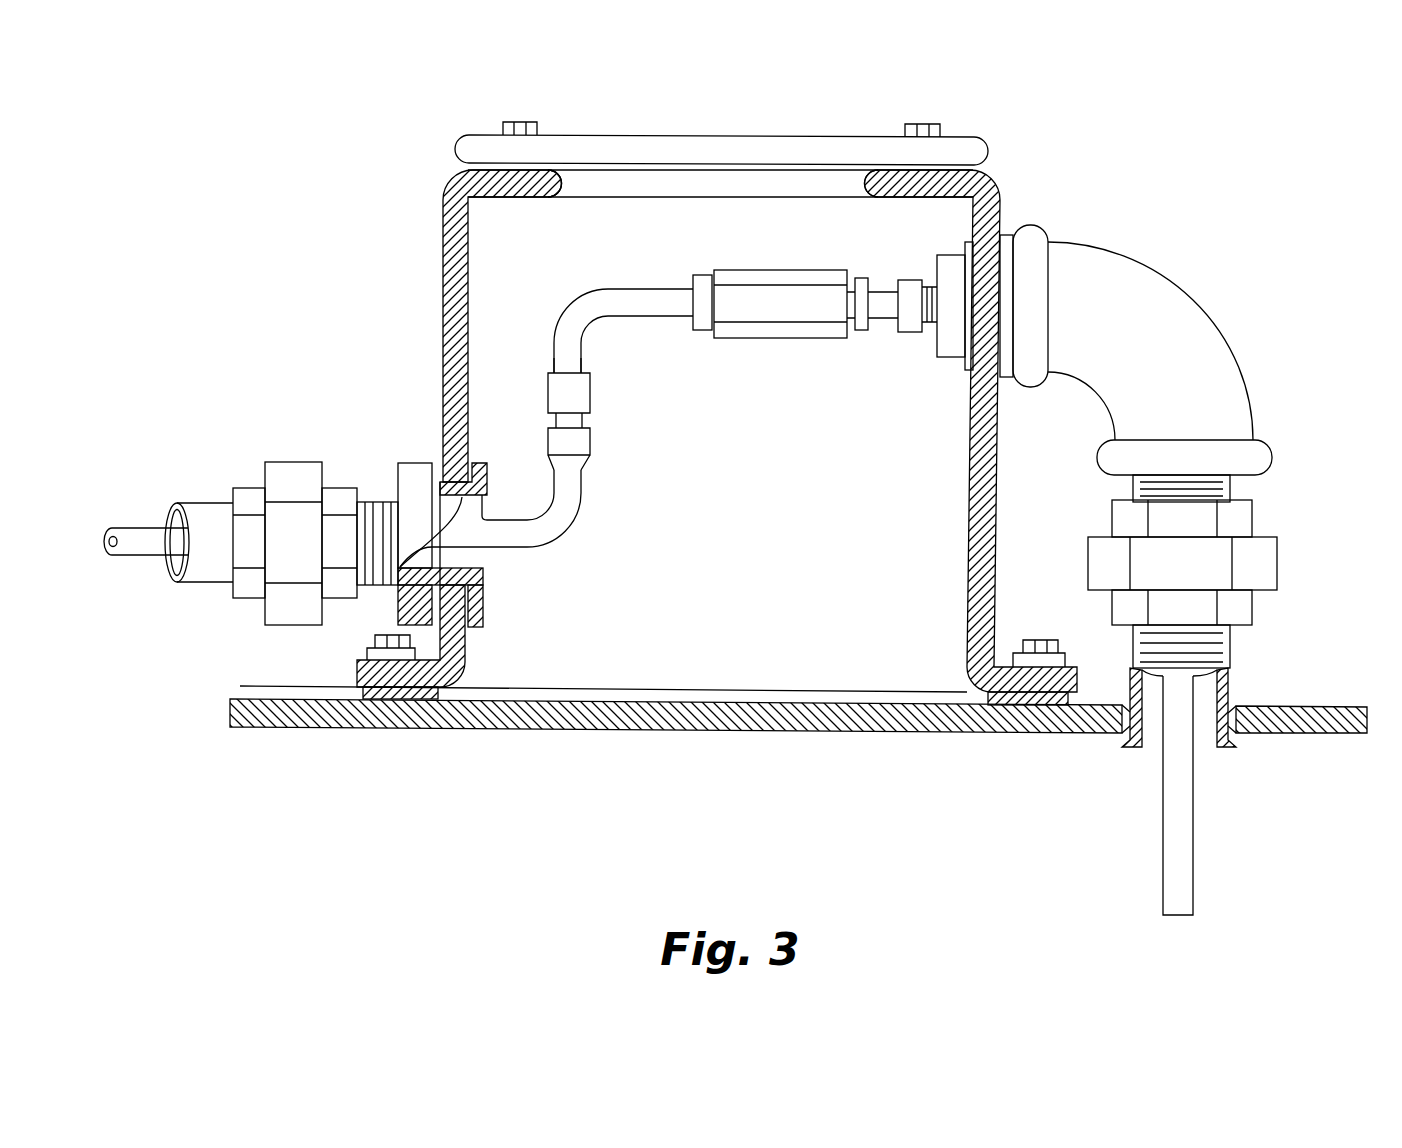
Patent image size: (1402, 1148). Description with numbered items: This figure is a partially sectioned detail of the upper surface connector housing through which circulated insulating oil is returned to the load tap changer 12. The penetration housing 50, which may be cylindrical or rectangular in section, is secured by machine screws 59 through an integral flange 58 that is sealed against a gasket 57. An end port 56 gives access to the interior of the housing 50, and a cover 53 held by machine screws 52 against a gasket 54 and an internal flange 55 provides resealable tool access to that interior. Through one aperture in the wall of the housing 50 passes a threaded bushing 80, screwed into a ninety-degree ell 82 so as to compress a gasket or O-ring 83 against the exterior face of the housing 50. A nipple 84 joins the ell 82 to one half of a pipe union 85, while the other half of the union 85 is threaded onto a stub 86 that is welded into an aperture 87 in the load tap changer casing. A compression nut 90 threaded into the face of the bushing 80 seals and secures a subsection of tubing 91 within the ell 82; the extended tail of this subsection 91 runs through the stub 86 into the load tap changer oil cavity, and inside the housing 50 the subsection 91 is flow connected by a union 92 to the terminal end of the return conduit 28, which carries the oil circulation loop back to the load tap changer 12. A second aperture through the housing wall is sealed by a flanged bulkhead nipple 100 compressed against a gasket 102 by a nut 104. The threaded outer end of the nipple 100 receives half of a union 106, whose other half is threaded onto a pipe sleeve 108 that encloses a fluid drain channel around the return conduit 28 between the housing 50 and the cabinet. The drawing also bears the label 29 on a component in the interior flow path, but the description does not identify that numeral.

The load tap changer 12 is at (657, 735).
The return conduit 28 is at (125, 560).
The filter 29 is at (764, 318).
The penetration housing 50 is at (443, 272).
The machine screws 52 is at (505, 124).
The cover 53 is at (745, 162).
The gasket 54 is at (670, 181).
The internal flange 55 is at (547, 198).
The end port 56 is at (565, 186).
The gasket 57 is at (510, 688).
The integral flange 58 is at (356, 677).
The machine screws 59 is at (371, 636).
The threaded bushing 80 is at (945, 360).
The 90° ell 82 is at (1135, 352).
The gasket or O-ring 83 is at (1010, 240).
The nipple 84 is at (1235, 491).
The pipe union 85 is at (1278, 546).
The stub 86 is at (1230, 671).
The aperture 87 is at (1250, 734).
The compression nut 90 is at (905, 334).
The subsection of tubing 91 is at (1160, 800).
The union 92 is at (592, 423).
The flanged bulkhead nipple 100 is at (492, 470).
The gasket 102 is at (485, 600).
The nut 104 is at (396, 472).
The union 106 is at (293, 462).
The pipe sleeve 108 is at (200, 506).